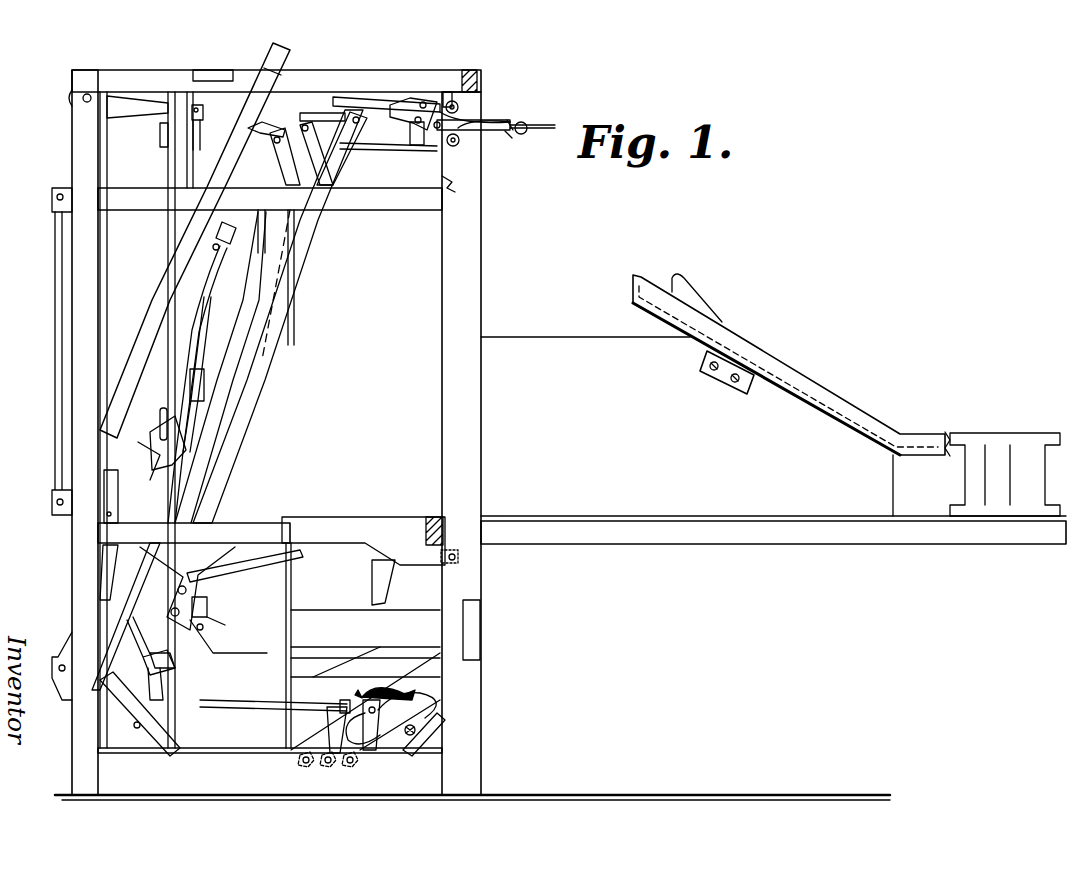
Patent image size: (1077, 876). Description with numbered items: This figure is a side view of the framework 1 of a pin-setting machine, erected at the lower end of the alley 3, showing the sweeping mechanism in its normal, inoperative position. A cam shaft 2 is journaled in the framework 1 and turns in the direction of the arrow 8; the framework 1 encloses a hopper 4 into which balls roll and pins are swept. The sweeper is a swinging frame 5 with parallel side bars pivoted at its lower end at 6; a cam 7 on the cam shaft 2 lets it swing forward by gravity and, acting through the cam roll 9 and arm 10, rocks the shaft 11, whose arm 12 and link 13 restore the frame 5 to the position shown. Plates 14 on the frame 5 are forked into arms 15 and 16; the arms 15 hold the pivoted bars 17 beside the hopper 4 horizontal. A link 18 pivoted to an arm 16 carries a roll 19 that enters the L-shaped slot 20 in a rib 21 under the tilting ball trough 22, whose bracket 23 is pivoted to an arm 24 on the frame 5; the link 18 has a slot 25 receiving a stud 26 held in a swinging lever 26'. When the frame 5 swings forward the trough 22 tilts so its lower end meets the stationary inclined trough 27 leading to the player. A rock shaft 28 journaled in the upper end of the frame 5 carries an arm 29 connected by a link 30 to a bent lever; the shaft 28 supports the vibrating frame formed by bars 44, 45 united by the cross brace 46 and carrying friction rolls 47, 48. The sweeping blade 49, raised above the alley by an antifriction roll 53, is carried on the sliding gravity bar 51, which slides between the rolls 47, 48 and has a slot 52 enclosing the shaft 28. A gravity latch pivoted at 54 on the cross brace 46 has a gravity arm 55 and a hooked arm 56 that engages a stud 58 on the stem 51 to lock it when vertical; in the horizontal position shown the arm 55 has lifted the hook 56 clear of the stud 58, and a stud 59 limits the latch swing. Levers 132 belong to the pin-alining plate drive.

The framework 1 is at (470, 433).
The cam shaft 2 is at (418, 737).
The alley 3 is at (930, 520).
The hopper 4 is at (346, 580).
The swinging frame 5 is at (306, 246).
The pivot 6 is at (136, 730).
The cam 7 is at (400, 716).
The arrow 8 is at (425, 693).
The cam roll 9 is at (377, 697).
The arm 10 is at (400, 743).
The shaft 11 is at (335, 745).
The arm 12 is at (370, 748).
The link 13 is at (243, 687).
The plates 14 is at (205, 606).
The arms 15 is at (247, 568).
The arms 16 is at (152, 558).
The pivoted bars 17 is at (352, 530).
The link 18 is at (197, 297).
The roll 19 is at (212, 247).
The L-shaped slot 20 is at (218, 255).
The rib 21 is at (232, 233).
The tilting trough 22 is at (276, 78).
The bracket 23 is at (250, 134).
The arm 24 is at (320, 176).
The slot 25 is at (152, 447).
The stud 26 is at (161, 404).
The swinging lever 26' is at (70, 572).
The stationary inclined ball trough 27 is at (740, 349).
The rock shaft 28 is at (355, 90).
The arm 29 is at (320, 120).
The link 30 is at (252, 297).
The bar 44 is at (368, 100).
The bar 45 is at (376, 148).
The cross brace 46 is at (414, 146).
The friction roll 47 is at (453, 100).
The friction roll 48 is at (458, 146).
The sweeping blade 49 is at (505, 134).
The sliding gravity bar 51 is at (506, 120).
The slot 52 is at (287, 123).
The antifriction roll 53 is at (527, 126).
The pivot 54 is at (447, 180).
The gravity arm 55 is at (445, 95).
The hooked arm 56 is at (435, 103).
The stud 58 is at (460, 115).
The stud 59 is at (423, 102).
The levers 132 is at (62, 418).